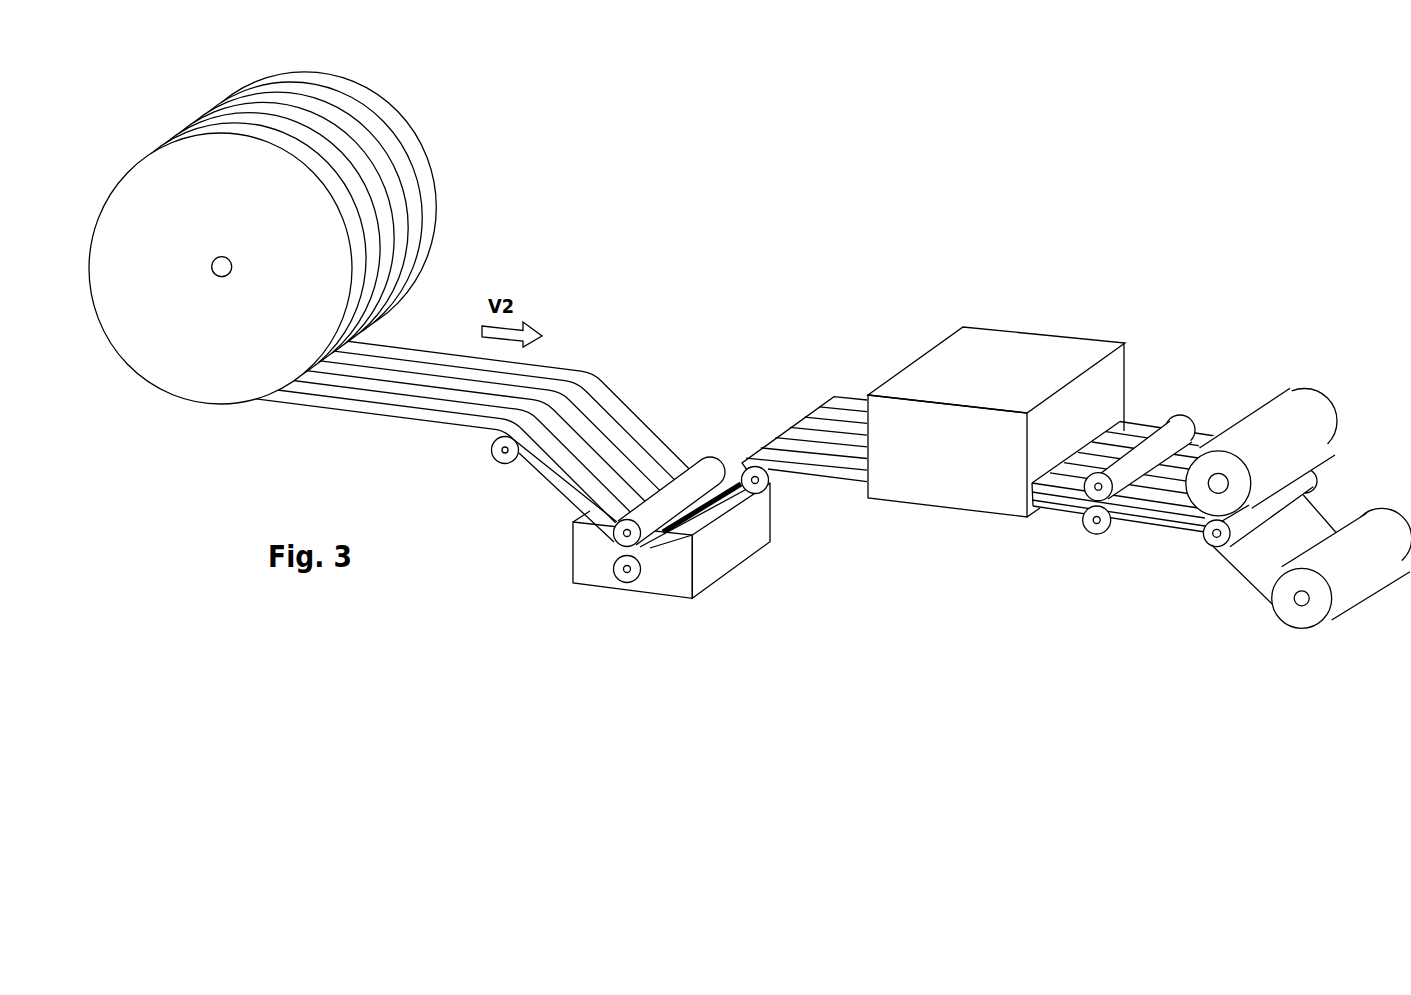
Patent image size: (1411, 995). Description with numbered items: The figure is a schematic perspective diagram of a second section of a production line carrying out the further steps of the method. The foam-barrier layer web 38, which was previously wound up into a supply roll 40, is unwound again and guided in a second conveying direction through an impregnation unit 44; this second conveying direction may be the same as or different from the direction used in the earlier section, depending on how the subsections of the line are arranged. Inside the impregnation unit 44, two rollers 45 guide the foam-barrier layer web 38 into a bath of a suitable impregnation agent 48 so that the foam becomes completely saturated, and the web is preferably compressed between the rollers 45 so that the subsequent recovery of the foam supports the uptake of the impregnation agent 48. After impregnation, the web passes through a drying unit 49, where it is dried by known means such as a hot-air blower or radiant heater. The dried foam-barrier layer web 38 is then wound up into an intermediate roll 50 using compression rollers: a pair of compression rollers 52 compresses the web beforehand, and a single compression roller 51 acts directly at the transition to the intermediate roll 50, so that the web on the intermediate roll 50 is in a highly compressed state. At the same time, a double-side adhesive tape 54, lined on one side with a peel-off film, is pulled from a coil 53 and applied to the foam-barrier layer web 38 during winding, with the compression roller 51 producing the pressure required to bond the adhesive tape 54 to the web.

The foam-barrier layer web 38 is at (455, 418).
The supply roll 40 is at (208, 195).
The impregnation unit 44 is at (572, 555).
The rollers 45 is at (625, 578).
The impregnation agent 48 is at (678, 577).
The drying unit 49 is at (1008, 358).
The intermediate roll 50 is at (1288, 418).
The compression roller 51 is at (1288, 493).
The pair of compression rollers 52 is at (1088, 528).
The coil 53 is at (1347, 570).
The double-side adhesive tape 54 is at (1260, 567).